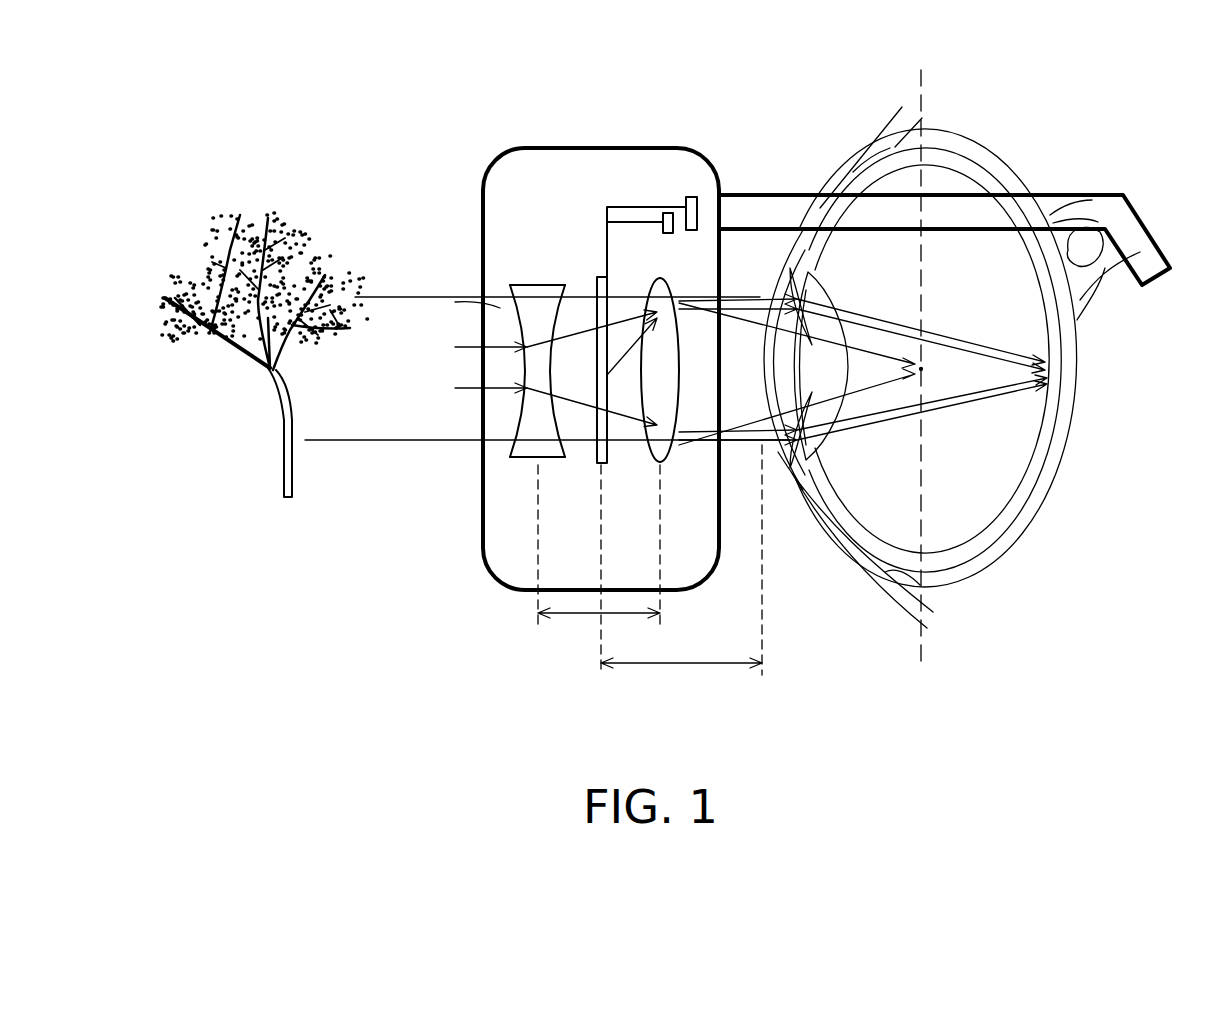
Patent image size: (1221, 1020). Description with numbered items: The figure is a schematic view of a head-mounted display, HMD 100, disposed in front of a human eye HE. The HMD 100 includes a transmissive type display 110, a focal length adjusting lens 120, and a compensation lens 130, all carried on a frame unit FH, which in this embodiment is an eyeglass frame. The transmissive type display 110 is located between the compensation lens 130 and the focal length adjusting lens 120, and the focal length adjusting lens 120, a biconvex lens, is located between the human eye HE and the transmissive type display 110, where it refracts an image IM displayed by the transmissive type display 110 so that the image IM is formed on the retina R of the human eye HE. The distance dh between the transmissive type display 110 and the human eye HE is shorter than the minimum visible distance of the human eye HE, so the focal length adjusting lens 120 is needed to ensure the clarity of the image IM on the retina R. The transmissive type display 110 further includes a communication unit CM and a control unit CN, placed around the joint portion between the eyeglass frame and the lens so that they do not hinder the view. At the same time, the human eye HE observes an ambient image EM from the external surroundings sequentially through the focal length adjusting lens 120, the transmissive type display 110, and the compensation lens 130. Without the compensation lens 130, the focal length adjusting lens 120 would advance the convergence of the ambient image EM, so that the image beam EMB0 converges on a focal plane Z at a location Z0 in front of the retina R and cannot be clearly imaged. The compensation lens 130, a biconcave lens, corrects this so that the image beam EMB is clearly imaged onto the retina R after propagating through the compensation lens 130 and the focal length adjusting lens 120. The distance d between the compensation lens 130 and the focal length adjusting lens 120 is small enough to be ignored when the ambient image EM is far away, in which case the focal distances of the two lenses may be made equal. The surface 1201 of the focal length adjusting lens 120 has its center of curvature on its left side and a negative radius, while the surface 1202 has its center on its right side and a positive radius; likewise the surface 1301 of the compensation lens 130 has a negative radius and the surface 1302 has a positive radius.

The head-mounted display 100 is at (1093, 692).
The transmissive type display 110 is at (596, 319).
The focal length adjusting lens 120 is at (696, 434).
The surface of the focal length adjusting lens 1201 is at (690, 301).
The surface of the focal length adjusting lens 1202 is at (640, 280).
The compensation lens 130 is at (506, 268).
The surface of the compensation lens 1301 is at (566, 348).
The surface of the compensation lens 1302 is at (501, 315).
The communication unit CM is at (692, 197).
The control unit CN is at (668, 212).
The image IM is at (636, 378).
The ambient image EM is at (234, 459).
The image beam EMB0 is at (358, 297).
The image beam EMB is at (1000, 352).
The human eye HE is at (961, 376).
The retina R is at (1058, 366).
The focal plane Z is at (922, 100).
The location on the focal plane Z0 is at (921, 370).
The frame unit FH is at (1120, 215).
The distance between the compensation lens and the focal length adjusting lens d is at (599, 570).
The distance between the transmissive type display and the human eye dh is at (681, 576).